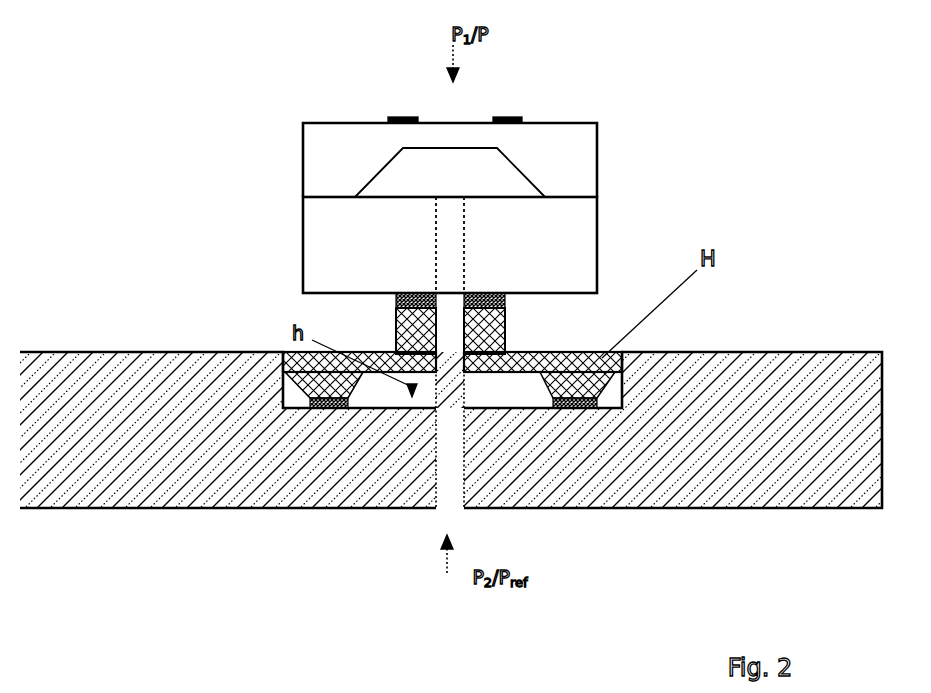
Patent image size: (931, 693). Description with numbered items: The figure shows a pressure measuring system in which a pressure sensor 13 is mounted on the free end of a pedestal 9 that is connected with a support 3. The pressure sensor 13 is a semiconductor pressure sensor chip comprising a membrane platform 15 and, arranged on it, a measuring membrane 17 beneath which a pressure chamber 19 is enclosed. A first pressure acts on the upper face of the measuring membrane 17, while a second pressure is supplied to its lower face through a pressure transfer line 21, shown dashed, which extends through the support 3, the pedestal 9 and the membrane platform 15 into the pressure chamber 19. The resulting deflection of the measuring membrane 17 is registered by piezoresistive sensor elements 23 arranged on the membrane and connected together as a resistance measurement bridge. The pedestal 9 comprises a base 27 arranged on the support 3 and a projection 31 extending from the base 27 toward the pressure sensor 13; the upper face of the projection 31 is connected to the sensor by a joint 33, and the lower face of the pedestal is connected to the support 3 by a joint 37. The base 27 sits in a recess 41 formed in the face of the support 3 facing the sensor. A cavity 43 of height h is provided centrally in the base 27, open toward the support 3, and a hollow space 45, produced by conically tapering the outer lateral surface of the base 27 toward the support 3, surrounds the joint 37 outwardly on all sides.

The support 3 is at (805, 373).
The pedestal 9 is at (525, 340).
The pressure sensor 13 is at (449, 172).
The membrane platform 15 is at (570, 263).
The measuring membrane 17 is at (450, 137).
The pressure chamber 19 is at (450, 172).
The pressure transfer line 21 is at (450, 234).
The sensor elements 23 is at (456, 87).
The base 27 is at (300, 402).
The projection 31 is at (478, 328).
The joint 33 is at (396, 297).
The joint 37 is at (560, 408).
The recess 41 is at (628, 365).
The cavity 43 is at (404, 392).
The hollow space 45 is at (293, 390).